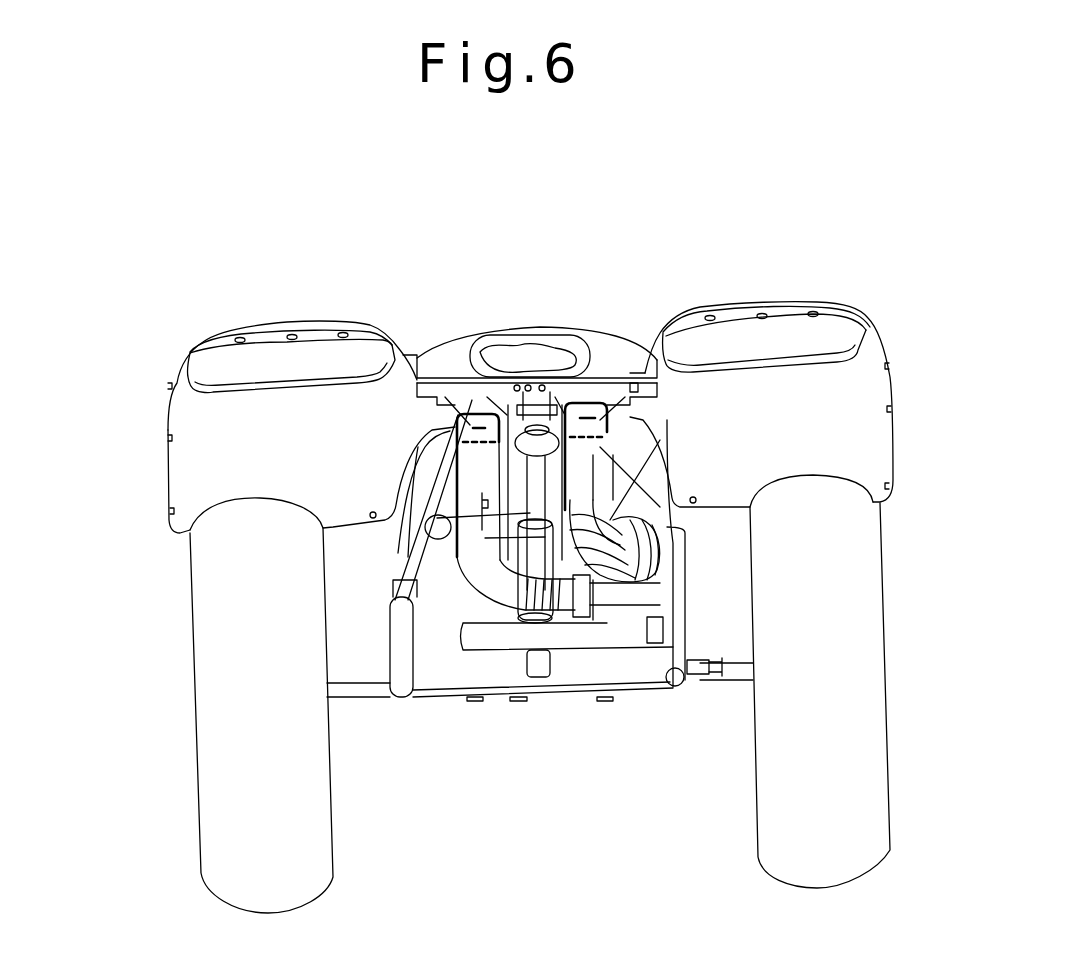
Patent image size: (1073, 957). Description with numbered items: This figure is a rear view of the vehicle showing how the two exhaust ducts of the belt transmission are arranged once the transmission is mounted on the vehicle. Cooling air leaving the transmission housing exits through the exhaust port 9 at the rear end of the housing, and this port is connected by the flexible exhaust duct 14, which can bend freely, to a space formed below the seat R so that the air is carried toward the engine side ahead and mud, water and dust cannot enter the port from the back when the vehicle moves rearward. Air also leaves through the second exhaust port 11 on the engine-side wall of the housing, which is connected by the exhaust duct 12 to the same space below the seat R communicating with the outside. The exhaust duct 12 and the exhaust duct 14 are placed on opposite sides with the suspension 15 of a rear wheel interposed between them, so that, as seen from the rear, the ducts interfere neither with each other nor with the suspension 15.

The suspension 15 is at (483, 417).
The seat R is at (560, 330).
The flexible exhaust duct 14 is at (603, 448).
The exhaust port 9 is at (640, 520).
The exhaust duct 12 is at (477, 567).
The second exhaust port 11 is at (593, 607).